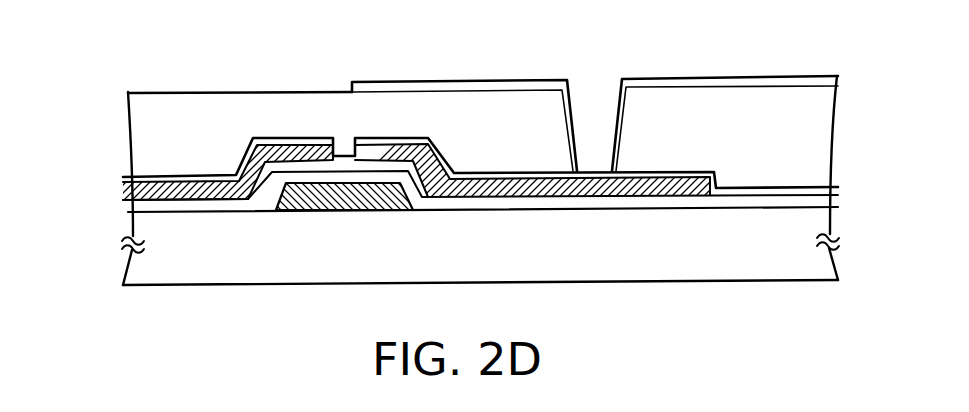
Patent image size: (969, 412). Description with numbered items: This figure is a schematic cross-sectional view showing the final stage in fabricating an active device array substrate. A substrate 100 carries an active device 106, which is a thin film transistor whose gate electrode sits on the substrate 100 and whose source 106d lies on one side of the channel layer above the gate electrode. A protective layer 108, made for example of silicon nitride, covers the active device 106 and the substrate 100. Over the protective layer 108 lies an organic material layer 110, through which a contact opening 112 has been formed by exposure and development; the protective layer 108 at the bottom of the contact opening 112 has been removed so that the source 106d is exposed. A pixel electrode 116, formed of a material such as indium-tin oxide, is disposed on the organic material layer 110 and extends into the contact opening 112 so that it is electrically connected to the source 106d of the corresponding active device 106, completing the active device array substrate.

The substrate 100 is at (795, 267).
The active device 106 is at (168, 170).
The source 106d is at (645, 184).
The protective layer 108 is at (217, 170).
The organic material layer 110 is at (160, 112).
The contact opening 112 is at (625, 118).
The pixel electrode 116 is at (448, 80).